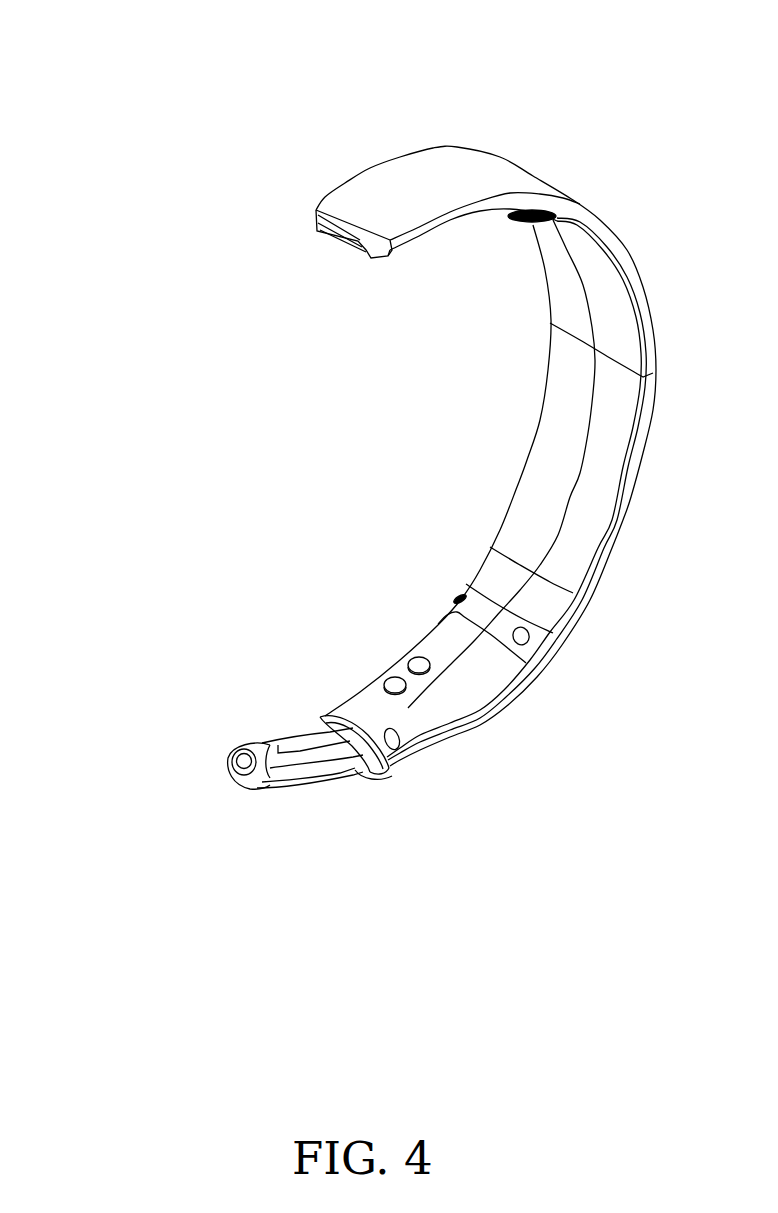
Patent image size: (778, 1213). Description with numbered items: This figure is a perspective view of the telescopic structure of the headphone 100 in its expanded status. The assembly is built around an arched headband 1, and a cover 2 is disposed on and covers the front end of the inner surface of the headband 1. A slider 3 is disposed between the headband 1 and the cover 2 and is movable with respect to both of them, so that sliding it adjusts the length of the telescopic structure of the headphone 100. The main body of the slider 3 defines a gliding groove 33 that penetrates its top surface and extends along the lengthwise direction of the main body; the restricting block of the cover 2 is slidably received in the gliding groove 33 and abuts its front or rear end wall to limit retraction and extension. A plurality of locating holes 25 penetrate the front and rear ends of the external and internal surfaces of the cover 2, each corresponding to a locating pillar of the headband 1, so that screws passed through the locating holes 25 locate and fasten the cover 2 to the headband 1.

The telescopic structure of the headphone 100 is at (110, 40).
The headband 1 is at (537, 440).
The cover 2 is at (437, 631).
The slider 3 is at (250, 745).
The gliding groove 33 is at (302, 742).
The locating holes 25 is at (400, 742).